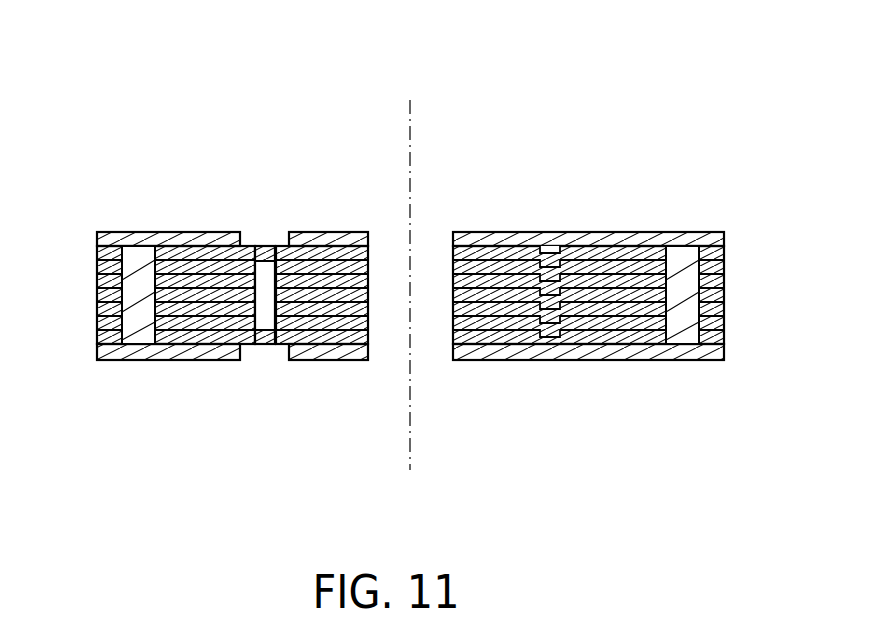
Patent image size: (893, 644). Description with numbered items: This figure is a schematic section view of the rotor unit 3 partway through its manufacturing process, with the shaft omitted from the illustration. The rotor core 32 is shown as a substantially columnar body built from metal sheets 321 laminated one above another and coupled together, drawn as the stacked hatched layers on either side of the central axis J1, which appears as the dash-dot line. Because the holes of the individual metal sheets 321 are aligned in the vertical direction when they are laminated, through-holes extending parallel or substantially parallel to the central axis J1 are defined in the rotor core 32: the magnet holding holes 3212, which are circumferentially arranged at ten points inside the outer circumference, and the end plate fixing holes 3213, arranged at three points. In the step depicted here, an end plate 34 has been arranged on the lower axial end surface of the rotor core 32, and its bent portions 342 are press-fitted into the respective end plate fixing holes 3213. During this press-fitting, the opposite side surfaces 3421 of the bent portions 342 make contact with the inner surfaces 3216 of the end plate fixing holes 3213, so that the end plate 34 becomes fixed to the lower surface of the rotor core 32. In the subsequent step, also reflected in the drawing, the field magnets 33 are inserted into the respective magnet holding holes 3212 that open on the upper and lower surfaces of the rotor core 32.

The rotor unit 3 is at (70, 98).
The rotor core 32 is at (196, 284).
The field magnets 33 is at (133, 272).
The end plate 34 is at (152, 88).
The metal sheets 321 is at (188, 250).
The bent portions 342 is at (219, 284).
The magnet holding holes 3212 is at (135, 326).
The end plate fixing holes 3213 is at (270, 294).
The inner surfaces 3216 is at (268, 257).
The opposite side surfaces 3421 is at (218, 246).
The central axis J1 is at (413, 143).